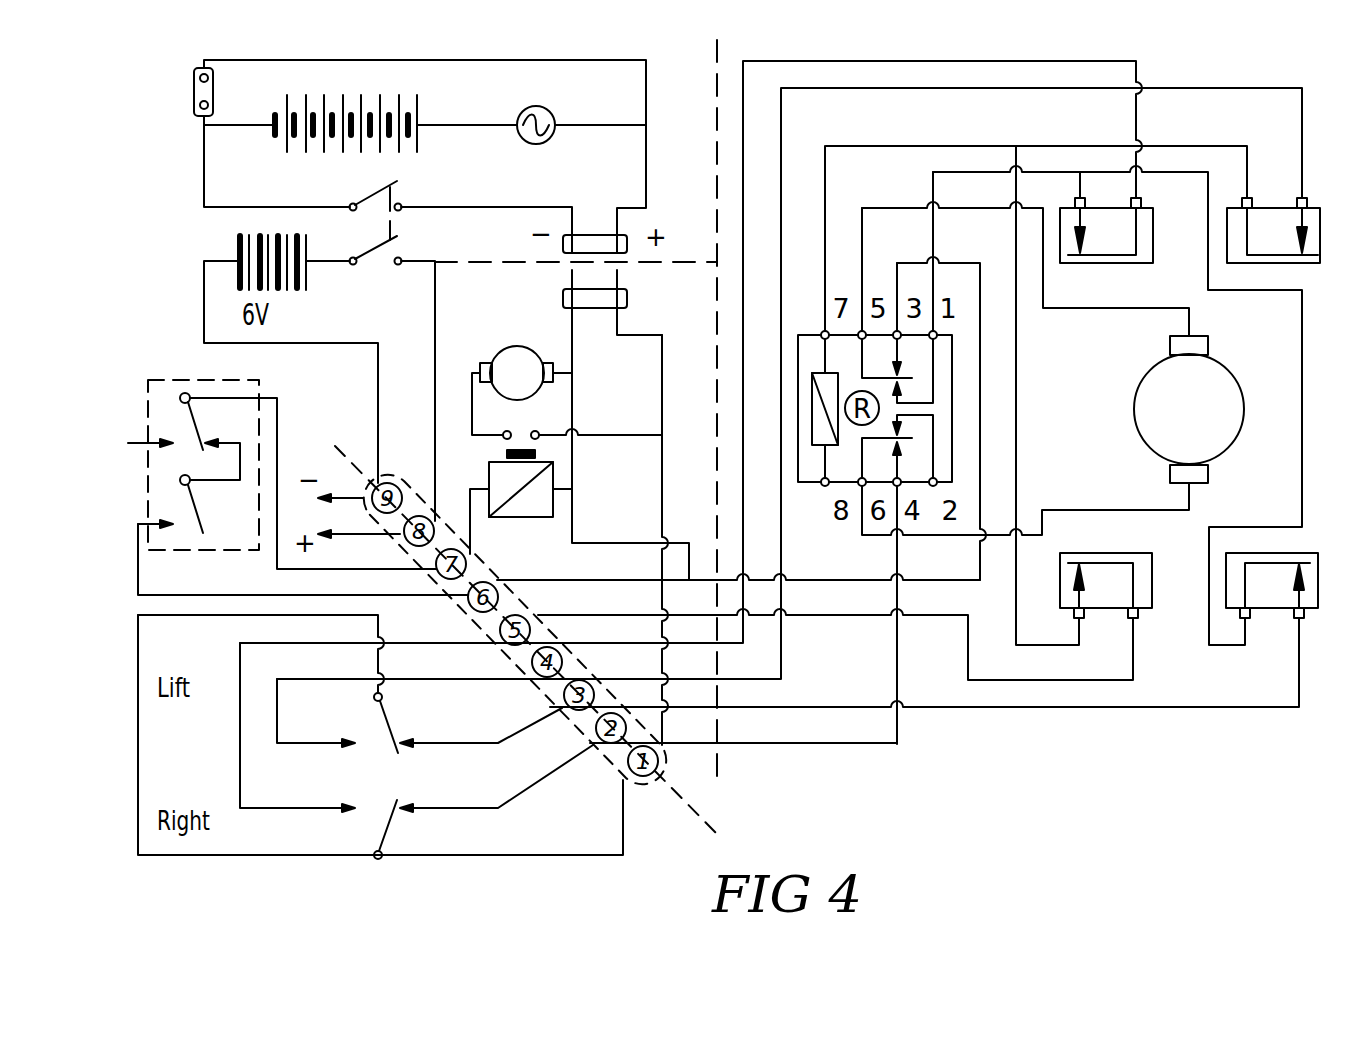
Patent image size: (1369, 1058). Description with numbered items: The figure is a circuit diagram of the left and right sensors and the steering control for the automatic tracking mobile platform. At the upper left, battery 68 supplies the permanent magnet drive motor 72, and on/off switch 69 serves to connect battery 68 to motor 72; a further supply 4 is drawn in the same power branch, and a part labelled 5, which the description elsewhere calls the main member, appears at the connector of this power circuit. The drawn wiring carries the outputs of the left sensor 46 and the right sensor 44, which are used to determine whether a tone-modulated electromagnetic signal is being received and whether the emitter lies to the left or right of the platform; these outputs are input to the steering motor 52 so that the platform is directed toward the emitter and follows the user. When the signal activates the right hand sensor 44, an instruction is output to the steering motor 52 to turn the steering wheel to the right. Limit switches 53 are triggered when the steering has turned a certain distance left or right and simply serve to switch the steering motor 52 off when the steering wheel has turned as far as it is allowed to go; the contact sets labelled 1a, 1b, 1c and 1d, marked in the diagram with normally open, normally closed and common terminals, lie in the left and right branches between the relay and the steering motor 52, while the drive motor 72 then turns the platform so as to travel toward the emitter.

The 12 volt battery 4 is at (349, 142).
The main member 5 is at (185, 95).
The battery 68 is at (363, 201).
The on/off switch 69 is at (394, 257).
The drive motor 72 is at (516, 354).
The limit switches 53 is at (380, 795).
The steering motor 52 is at (1198, 409).
The left normally-open switch contact 1a is at (1290, 221).
The right normally-open switch contact 1b is at (1289, 588).
The left limit switch contact 1c is at (1123, 237).
The right limit switch contact 1d is at (1123, 583).
The right sensor 44 is at (1208, 592).
The left sensor 46 is at (1208, 203).